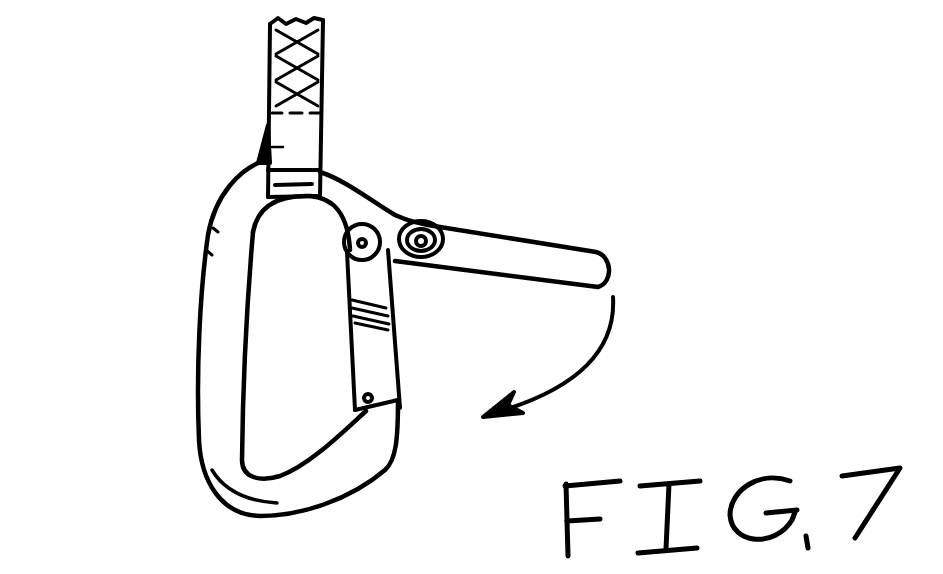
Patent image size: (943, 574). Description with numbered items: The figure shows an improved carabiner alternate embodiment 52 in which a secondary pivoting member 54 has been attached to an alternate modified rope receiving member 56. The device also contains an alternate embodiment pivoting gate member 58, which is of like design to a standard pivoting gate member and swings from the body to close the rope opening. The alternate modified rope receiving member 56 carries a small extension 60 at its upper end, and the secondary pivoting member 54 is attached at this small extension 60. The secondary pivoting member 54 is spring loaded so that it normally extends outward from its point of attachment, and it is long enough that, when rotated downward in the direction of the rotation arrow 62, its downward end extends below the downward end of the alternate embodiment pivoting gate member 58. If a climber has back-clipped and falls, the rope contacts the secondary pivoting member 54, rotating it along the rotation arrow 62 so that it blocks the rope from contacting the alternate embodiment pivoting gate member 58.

The improved carabiner alternate embodiment 52 is at (172, 155).
The secondary pivoting member 54 is at (560, 237).
The alternate modified rope receiving member 56 is at (190, 350).
The alternate embodiment pivoting gate member 58 is at (395, 343).
The small extension 60 is at (400, 207).
The rotation arrow 62 is at (548, 388).